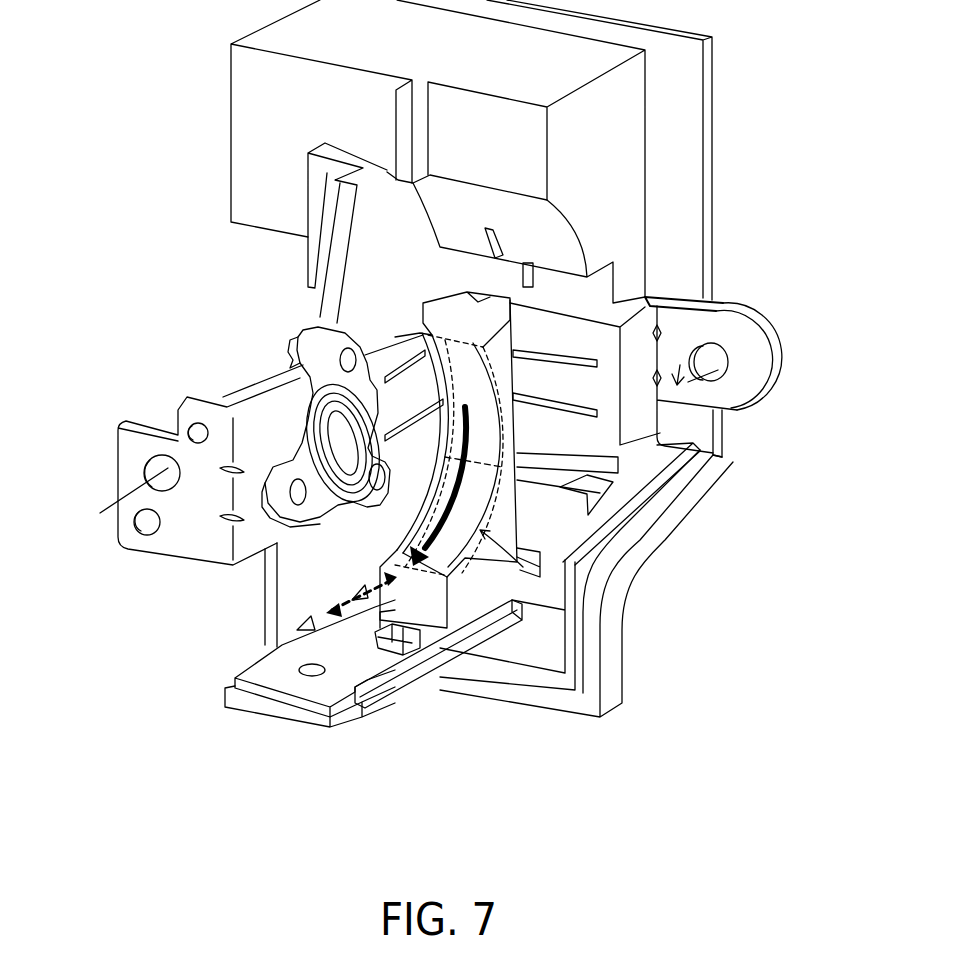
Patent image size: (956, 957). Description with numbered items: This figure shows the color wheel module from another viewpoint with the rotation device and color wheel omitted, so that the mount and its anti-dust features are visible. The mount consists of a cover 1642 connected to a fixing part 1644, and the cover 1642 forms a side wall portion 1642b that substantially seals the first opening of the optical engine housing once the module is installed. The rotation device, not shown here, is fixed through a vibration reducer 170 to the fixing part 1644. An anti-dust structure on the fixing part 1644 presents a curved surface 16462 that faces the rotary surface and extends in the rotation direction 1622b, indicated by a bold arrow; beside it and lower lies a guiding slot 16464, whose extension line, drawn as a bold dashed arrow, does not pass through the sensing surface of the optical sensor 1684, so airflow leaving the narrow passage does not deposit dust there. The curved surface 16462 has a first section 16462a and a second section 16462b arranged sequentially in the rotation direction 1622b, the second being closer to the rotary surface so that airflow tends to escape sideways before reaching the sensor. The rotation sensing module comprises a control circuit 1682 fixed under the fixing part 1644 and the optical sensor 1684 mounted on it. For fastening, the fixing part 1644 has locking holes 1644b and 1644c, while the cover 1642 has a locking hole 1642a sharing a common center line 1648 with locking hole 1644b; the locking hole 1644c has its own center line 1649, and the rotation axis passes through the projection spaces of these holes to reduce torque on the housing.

The vibration reducer 170 is at (293, 420).
The rotation direction 1622b is at (397, 548).
The cover 1642 is at (628, 163).
The locking hole 1642a is at (730, 368).
The side wall portion 1642b is at (687, 107).
The fixing part 1644 is at (265, 680).
The locking hole 1644b is at (723, 410).
The locking hole 1644c is at (158, 460).
The center line 1648 is at (705, 303).
The center line 1649 is at (137, 476).
The curved surface 16462 is at (437, 308).
The first section 16462a is at (505, 380).
The second section 16462b is at (540, 568).
The guiding slot 16464 is at (422, 348).
The control circuit 1682 is at (377, 692).
The optical sensor 1684 is at (418, 637).